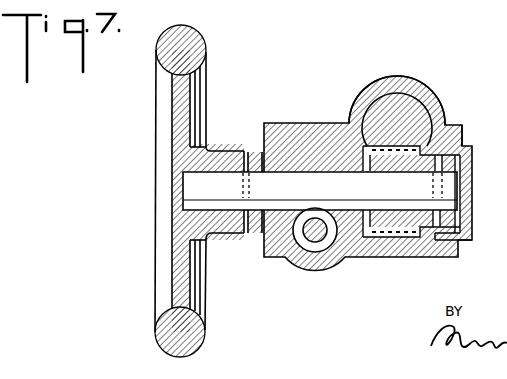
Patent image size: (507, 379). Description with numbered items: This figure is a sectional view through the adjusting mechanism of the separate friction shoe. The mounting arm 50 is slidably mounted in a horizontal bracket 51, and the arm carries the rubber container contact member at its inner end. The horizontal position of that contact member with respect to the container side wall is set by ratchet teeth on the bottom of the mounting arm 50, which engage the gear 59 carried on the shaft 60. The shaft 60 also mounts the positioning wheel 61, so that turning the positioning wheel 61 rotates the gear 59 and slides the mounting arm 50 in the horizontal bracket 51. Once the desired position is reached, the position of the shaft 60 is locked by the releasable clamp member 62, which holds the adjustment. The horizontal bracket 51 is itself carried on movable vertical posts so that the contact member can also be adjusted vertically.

The mounting arm 50 is at (434, 108).
The horizontal bracket 51 is at (415, 113).
The gear 59 is at (357, 132).
The shaft 60 is at (447, 192).
The positioning wheel 61 is at (207, 47).
The releasable clamp member 62 is at (312, 249).